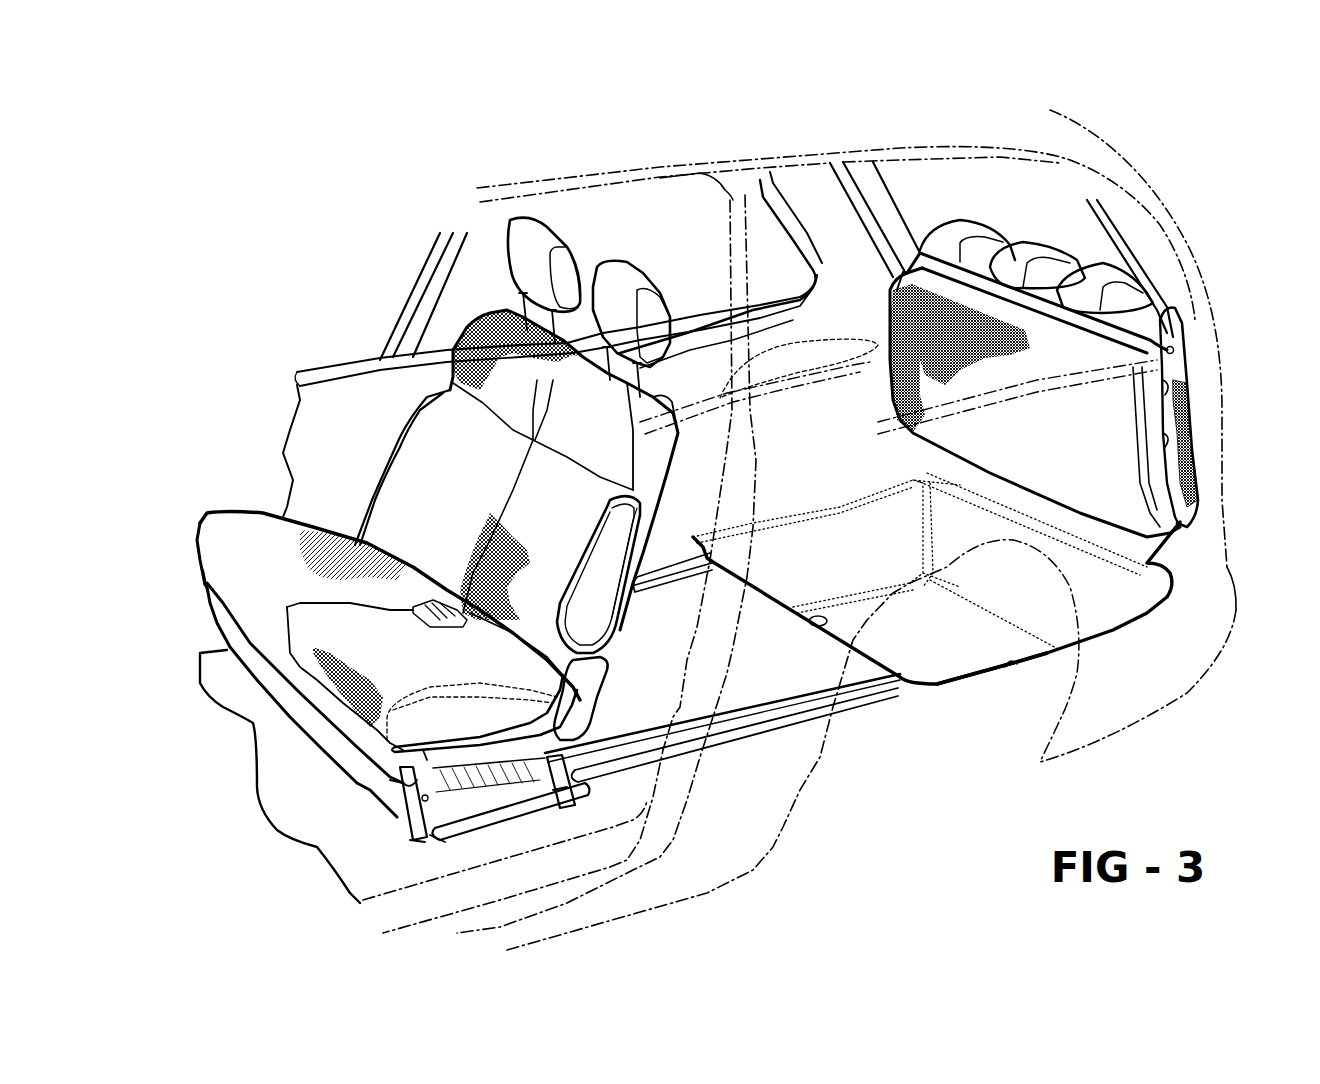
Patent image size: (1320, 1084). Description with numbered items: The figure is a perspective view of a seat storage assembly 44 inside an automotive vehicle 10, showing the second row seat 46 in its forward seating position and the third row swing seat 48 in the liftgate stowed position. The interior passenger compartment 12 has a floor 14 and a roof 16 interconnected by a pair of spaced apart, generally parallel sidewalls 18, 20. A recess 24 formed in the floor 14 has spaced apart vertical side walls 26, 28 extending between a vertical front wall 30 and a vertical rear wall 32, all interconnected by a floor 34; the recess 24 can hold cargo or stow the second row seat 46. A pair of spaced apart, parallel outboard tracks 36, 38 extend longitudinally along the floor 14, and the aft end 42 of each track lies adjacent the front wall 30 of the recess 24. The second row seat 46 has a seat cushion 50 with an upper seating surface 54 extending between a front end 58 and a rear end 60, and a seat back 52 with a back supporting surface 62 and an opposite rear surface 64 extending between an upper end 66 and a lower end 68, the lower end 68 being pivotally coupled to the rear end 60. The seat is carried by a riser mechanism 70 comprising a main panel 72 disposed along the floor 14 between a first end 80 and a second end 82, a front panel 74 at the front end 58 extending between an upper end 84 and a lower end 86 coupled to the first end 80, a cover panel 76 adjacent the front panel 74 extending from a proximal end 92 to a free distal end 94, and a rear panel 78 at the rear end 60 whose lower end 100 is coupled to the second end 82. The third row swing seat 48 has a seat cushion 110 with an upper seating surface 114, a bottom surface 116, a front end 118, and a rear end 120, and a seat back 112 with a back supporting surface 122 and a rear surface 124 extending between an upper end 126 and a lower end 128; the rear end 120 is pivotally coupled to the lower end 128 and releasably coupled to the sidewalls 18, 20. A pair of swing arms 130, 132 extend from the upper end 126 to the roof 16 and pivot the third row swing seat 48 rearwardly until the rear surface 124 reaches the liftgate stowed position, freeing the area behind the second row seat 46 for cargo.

The automotive vehicle 10 is at (280, 143).
The interior passenger compartment 12 is at (335, 352).
The floor 14 is at (270, 815).
The roof 16 is at (667, 178).
The sidewall 18 is at (693, 663).
The sidewall 20 is at (800, 410).
The recess 24 is at (1173, 593).
The side wall 26 is at (1013, 670).
The side wall 28 is at (820, 563).
The front wall 30 is at (810, 623).
The rear wall 32 is at (1004, 585).
The floor 34 is at (924, 643).
The outboard track 36 is at (760, 735).
The outboard track 38 is at (657, 580).
The aft end 42 is at (703, 560).
The seat storage assembly 44 is at (807, 327).
The second row seat 46 is at (198, 520).
The third row swing seat 48 is at (1190, 532).
The seat cushion 50 is at (250, 535).
The seat back 52 is at (410, 467).
The upper seating surface 54 is at (400, 670).
The front end 58 is at (243, 599).
The rear end 60 is at (547, 703).
The back supporting surface 62 is at (527, 530).
The rear surface 64 is at (667, 473).
The upper end 66 is at (657, 395).
The lower end 68 is at (600, 660).
The riser mechanism 70 is at (275, 717).
The main panel 72 is at (500, 822).
The front panel 74 is at (485, 775).
The cover panel 76 is at (405, 817).
The rear panel 78 is at (567, 757).
The first end 80 is at (443, 836).
The second end 82 is at (568, 802).
The upper end 84 is at (423, 750).
The lower end 86 is at (428, 800).
The proximal end 92 is at (390, 780).
The distal end 94 is at (415, 841).
The lower end 100 is at (553, 797).
The seat cushion 110 is at (1143, 428).
The seat back 112 is at (1187, 437).
The upper seating surface 114 is at (1173, 460).
The bottom surface 116 is at (998, 441).
The front end 118 is at (897, 280).
The rear end 120 is at (1143, 566).
The back supporting surface 122 is at (1190, 400).
The rear surface 124 is at (1187, 473).
The upper end 126 is at (1170, 313).
The lower end 128 is at (1187, 517).
The swing arm 130 is at (1120, 260).
The swing arm 132 is at (893, 207).